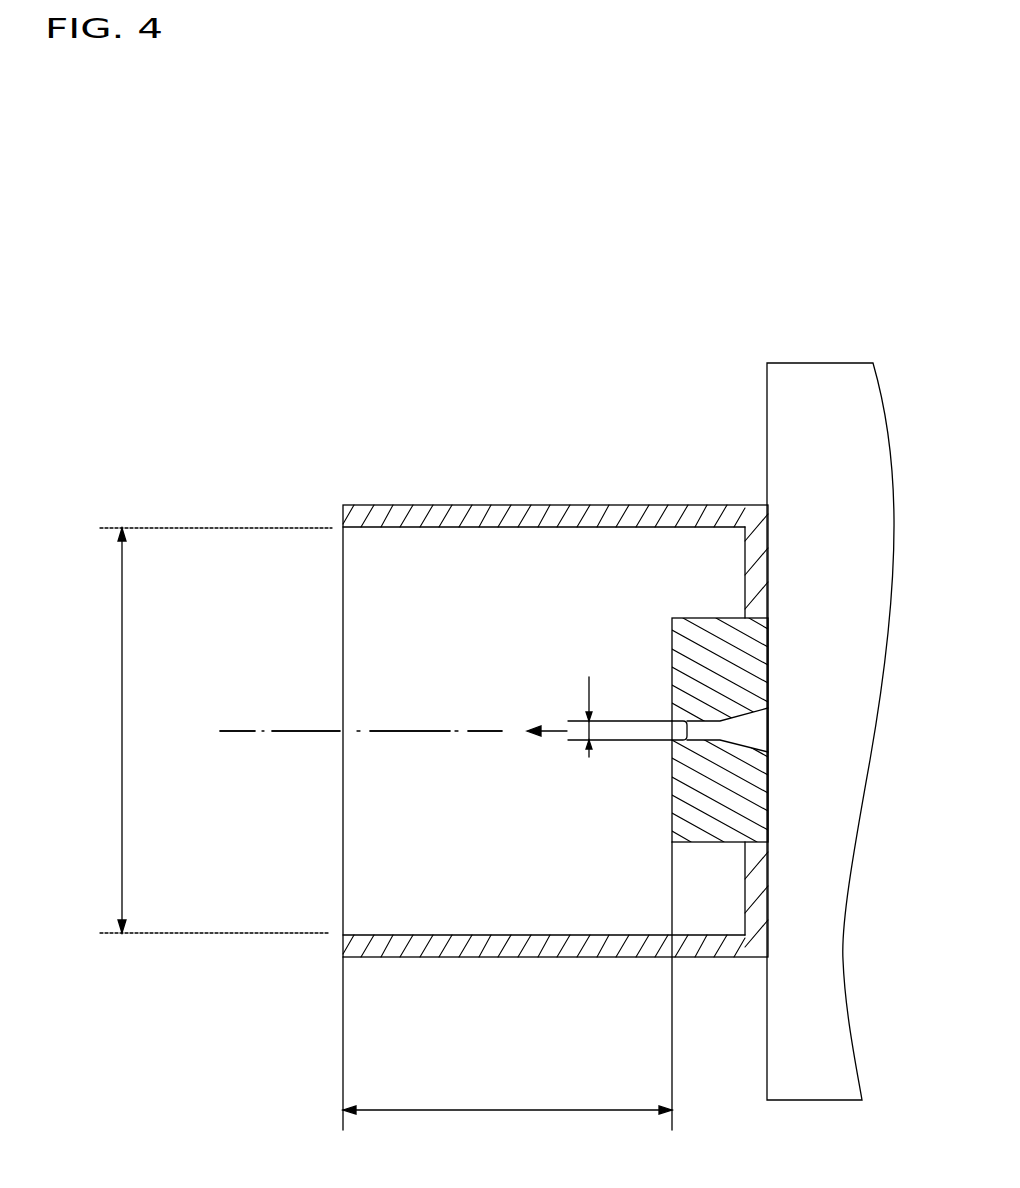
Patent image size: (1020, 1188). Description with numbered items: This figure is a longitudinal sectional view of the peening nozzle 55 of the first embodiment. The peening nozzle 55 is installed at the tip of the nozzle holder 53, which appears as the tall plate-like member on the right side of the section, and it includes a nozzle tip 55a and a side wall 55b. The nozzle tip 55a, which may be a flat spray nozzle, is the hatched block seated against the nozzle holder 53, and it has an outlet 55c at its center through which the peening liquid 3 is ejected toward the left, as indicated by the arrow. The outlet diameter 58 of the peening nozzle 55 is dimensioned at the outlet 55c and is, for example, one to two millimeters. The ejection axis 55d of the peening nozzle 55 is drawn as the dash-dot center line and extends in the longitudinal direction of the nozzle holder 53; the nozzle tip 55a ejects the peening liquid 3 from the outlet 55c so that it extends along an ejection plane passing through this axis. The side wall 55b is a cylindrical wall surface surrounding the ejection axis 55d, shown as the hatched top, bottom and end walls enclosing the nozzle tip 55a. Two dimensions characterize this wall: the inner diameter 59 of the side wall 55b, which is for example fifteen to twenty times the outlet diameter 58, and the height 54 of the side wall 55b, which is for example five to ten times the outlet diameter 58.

The peening liquid 3 is at (552, 734).
The nozzle holder 53 is at (822, 362).
The height of the side wall 54 is at (507, 986).
The peening nozzle 55 is at (555, 612).
The nozzle tip 55a is at (668, 660).
The side wall 55b is at (522, 505).
The outlet 55c is at (670, 741).
The ejection axis 55d is at (275, 731).
The outlet diameter 58 is at (589, 700).
The inner diameter of the side wall 59 is at (122, 780).